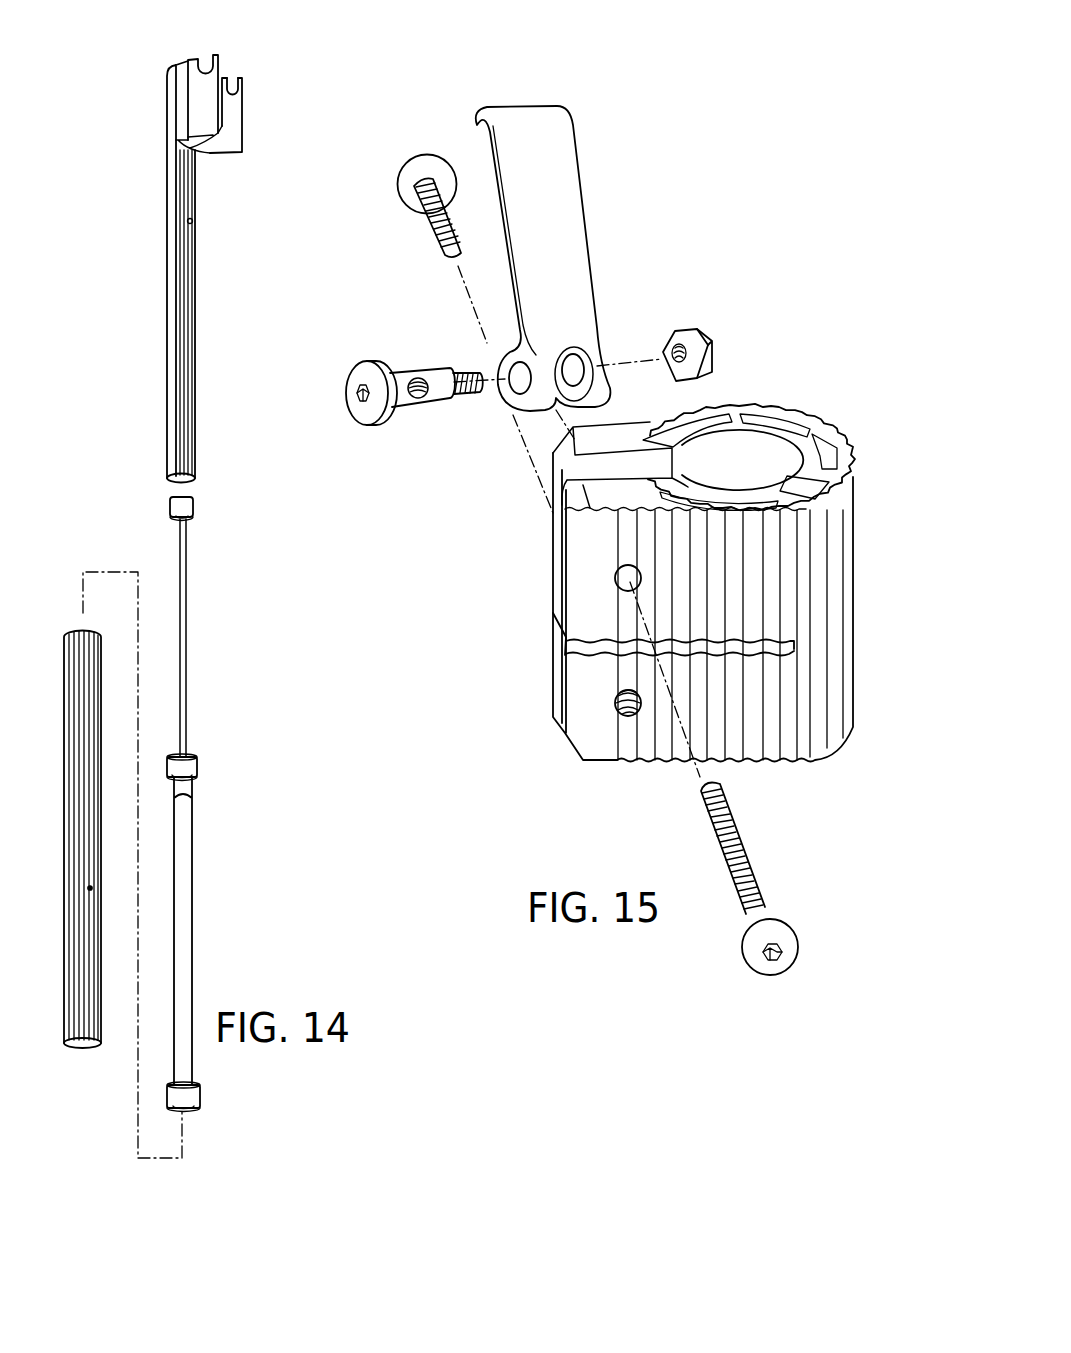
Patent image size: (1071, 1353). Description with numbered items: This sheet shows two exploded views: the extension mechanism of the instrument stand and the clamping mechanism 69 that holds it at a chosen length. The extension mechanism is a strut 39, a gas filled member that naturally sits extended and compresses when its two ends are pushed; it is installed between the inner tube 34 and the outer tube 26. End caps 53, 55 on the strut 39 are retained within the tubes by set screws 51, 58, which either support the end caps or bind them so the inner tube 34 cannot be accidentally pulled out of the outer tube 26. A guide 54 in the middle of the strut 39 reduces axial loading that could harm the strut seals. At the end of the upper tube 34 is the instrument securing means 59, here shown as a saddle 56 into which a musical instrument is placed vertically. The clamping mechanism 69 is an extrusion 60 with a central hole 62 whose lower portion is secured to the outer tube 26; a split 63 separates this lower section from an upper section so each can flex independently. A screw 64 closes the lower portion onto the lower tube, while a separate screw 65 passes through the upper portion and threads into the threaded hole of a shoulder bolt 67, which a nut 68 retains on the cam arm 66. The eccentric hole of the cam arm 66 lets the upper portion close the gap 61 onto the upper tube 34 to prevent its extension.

In FIG. 14, the outer tube 26 is at (68, 630).
In FIG. 14, the inner tube 34 is at (196, 372).
In FIG. 14, the strut 39 is at (192, 862).
In FIG. 14, the set screw 51 is at (192, 221).
In FIG. 14, the end cap 53 is at (195, 503).
In FIG. 14, the guide 54 is at (197, 762).
In FIG. 14, the end cap 55 is at (200, 1088).
In FIG. 14, the saddle 56 is at (230, 78).
In FIG. 14, the set screw 58 is at (90, 888).
In FIG. 14, the instrument securing means 59 is at (245, 126).
In FIG. 15, the extrusion 60 is at (728, 410).
In FIG. 15, the gap 61 is at (543, 527).
In FIG. 15, the central hole 62 is at (783, 435).
In FIG. 15, the split 63 is at (556, 617).
In FIG. 15, the screw 64 is at (414, 160).
In FIG. 15, the screw 65 is at (747, 855).
In FIG. 15, the cam arm 66 is at (582, 160).
In FIG. 15, the shoulder bolt 67 is at (360, 412).
In FIG. 15, the nut 68 is at (703, 345).
In FIG. 15, the clamping mechanism 69 is at (721, 261).